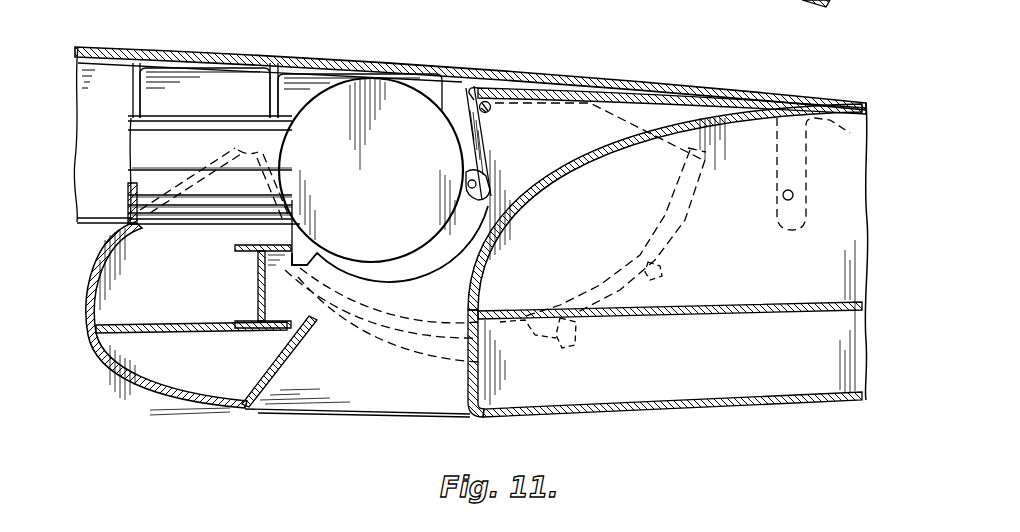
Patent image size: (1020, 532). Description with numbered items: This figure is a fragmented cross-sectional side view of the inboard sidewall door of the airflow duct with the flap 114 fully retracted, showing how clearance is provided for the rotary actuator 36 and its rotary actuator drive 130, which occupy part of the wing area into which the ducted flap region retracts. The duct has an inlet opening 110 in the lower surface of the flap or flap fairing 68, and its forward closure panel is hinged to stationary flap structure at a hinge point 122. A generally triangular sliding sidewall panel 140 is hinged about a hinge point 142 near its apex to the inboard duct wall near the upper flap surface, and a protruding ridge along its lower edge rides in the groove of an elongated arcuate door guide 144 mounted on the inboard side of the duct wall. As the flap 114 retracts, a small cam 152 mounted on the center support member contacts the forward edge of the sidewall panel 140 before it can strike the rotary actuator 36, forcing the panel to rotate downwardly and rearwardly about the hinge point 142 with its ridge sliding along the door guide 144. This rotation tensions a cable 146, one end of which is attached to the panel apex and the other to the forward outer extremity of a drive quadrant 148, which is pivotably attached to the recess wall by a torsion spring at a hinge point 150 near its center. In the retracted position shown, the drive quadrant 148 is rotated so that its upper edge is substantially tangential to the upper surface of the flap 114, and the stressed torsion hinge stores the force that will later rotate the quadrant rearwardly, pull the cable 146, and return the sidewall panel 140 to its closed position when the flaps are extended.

The rotary actuator 36 is at (384, 78).
The flap fairing 68 is at (640, 407).
The inlet opening 110 is at (354, 414).
The flap 114 is at (86, 277).
The hinge point 122 is at (262, 284).
The rotary actuator drive 130 is at (150, 152).
The sliding sidewall panel 140 is at (669, 239).
The hinge point 142 is at (491, 112).
The door guide 144 is at (402, 343).
The cable 146 is at (646, 92).
The drive quadrant 148 is at (795, 168).
The hinge point 150 is at (798, 199).
The cam 152 is at (488, 178).